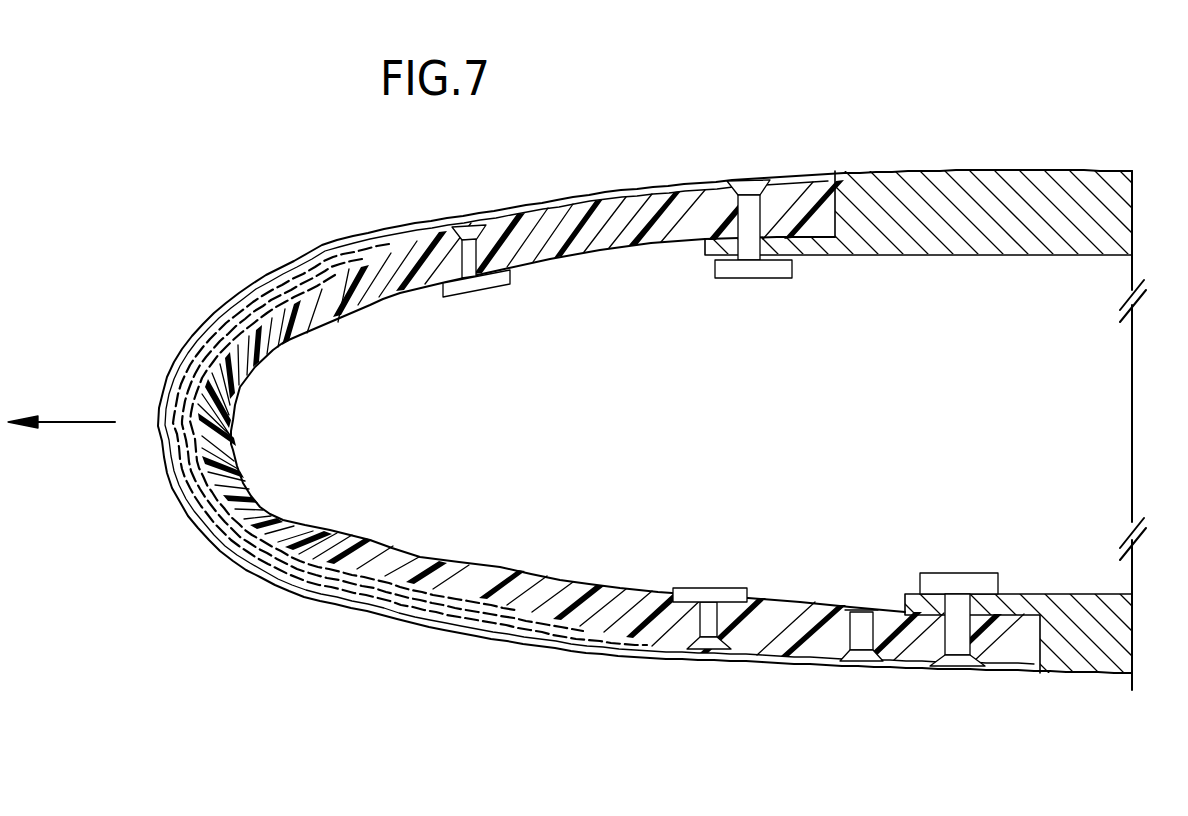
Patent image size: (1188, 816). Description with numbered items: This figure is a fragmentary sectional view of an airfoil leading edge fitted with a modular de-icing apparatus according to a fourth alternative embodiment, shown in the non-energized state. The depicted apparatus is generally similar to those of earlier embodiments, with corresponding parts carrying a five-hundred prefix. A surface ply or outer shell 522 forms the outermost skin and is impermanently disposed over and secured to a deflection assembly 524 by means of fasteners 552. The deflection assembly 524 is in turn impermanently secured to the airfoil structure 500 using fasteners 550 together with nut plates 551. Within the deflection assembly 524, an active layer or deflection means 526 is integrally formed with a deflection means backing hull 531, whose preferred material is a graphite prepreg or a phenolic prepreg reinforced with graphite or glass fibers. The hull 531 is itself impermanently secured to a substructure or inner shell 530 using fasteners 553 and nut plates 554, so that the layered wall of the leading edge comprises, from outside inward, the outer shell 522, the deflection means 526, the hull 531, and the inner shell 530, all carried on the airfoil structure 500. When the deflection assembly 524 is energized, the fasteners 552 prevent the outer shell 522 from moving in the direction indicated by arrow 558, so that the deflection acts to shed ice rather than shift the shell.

The airfoil structure 500 is at (1050, 183).
The outer shell 522 is at (752, 184).
The deflection assembly 524 is at (850, 198).
The deflection means 526 is at (187, 337).
The inner shell 530 is at (630, 238).
The deflection means backing hull 531 is at (405, 237).
The fasteners 550 is at (760, 267).
The nut plates 551 is at (750, 250).
The fasteners 552 is at (858, 662).
The fasteners 553 is at (471, 268).
The nut plates 554 is at (505, 287).
The arrow 558 is at (76, 420).